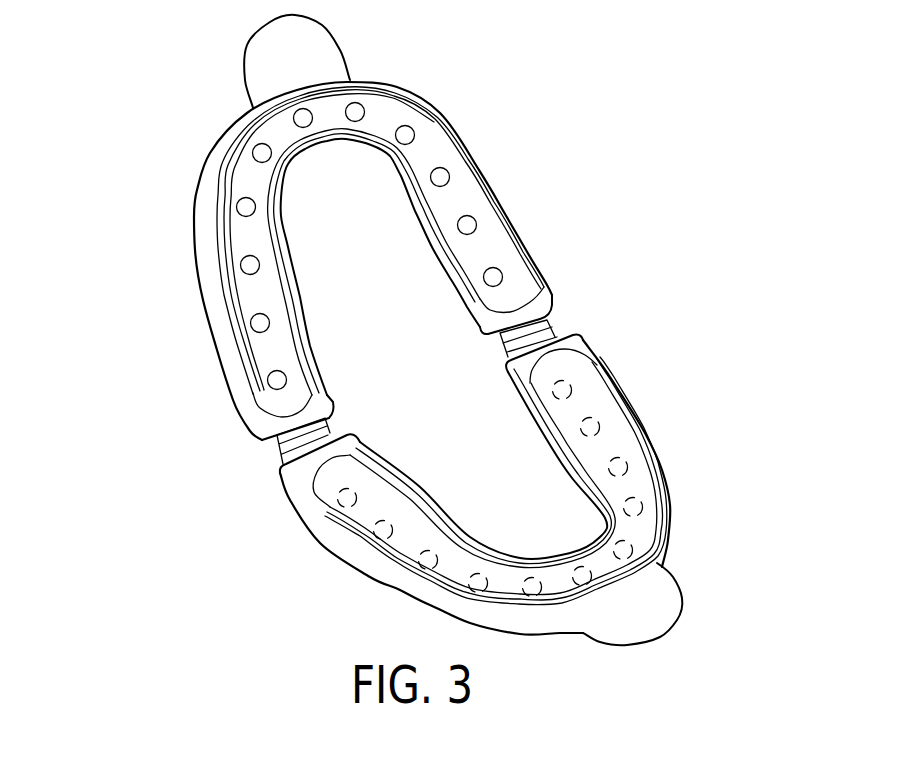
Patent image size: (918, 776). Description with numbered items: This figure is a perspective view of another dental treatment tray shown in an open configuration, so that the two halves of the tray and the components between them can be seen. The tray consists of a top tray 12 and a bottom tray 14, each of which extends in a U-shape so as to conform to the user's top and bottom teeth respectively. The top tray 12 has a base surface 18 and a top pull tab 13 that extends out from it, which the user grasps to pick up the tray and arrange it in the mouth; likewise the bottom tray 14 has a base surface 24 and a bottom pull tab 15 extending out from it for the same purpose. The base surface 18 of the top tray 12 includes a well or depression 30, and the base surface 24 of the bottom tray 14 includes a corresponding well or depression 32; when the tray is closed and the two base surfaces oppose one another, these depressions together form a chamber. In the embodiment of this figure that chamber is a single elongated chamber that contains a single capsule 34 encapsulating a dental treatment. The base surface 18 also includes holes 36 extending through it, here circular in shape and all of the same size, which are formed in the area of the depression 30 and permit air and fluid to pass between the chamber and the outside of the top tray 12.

The top tray 12 is at (317, 227).
The top pull tab 13 is at (287, 43).
The bottom tray 14 is at (555, 490).
The bottom pull tab 15 is at (653, 608).
The base surface 18 is at (272, 422).
The base surface 24 is at (567, 342).
The well or depression 30 is at (268, 349).
The well or depression 32 is at (610, 390).
The capsule 34 is at (613, 440).
The hole 36 is at (247, 268).